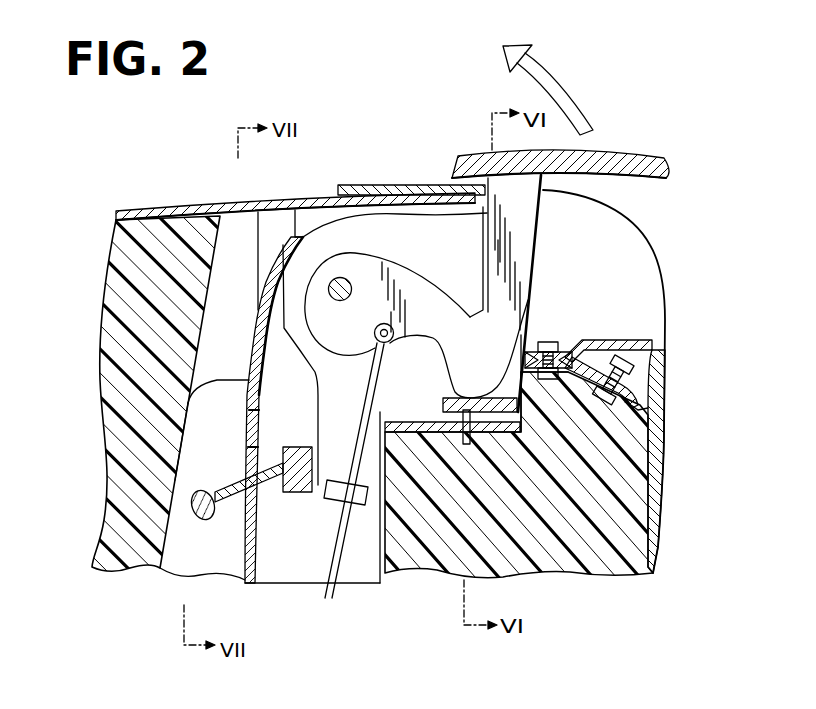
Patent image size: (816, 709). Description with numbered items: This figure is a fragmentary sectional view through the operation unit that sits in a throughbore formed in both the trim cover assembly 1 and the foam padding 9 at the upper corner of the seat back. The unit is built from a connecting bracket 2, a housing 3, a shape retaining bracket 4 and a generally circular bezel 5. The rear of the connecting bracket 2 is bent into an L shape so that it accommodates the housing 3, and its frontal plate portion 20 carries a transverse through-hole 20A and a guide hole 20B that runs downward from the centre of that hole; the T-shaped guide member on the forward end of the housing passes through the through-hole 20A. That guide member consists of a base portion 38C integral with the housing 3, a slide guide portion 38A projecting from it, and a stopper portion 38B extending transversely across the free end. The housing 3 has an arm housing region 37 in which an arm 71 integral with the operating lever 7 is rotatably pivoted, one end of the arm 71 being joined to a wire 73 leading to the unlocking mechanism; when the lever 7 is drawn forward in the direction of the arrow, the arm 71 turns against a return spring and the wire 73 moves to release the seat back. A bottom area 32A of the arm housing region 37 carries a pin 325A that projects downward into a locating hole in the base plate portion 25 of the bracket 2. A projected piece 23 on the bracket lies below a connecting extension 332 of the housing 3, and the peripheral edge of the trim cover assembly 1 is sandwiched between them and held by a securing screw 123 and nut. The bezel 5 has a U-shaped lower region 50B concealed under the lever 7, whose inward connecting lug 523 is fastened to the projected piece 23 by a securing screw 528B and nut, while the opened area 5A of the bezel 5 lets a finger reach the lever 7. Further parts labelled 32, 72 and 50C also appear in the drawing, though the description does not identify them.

The trim cover assembly 1 is at (150, 208).
The connecting bracket 2 is at (278, 560).
The housing 3 is at (337, 237).
The shape retaining bracket 4 is at (647, 450).
The bezel 5 is at (370, 185).
The opened area of the bezel 5A is at (640, 280).
The operating lever 7 is at (633, 157).
The foam padding 9 is at (140, 322).
The frontal plate portion 20 is at (262, 204).
The transverse through-hole 20A is at (250, 433).
The guide hole 20B is at (247, 515).
The projected piece 23 is at (600, 392).
The base plate portion 25 is at (408, 422).
The hook 32 is at (410, 220).
The bottom area 32A is at (445, 397).
The arm housing region 37 is at (323, 410).
The slide guide portion 38A is at (190, 480).
The stopper portion 38B is at (200, 520).
The base portion 38C is at (295, 500).
The arm 71 is at (535, 228).
The pivot pin 72 is at (332, 281).
The wire 73 is at (372, 510).
The securing screw 123 is at (630, 378).
The pin 325A is at (437, 432).
The U-shaped lower region 50B is at (628, 340).
The bracket flange 50C is at (663, 363).
The connecting extension 332 is at (585, 362).
The connecting lug 523 is at (568, 348).
The securing screw 528B is at (550, 342).